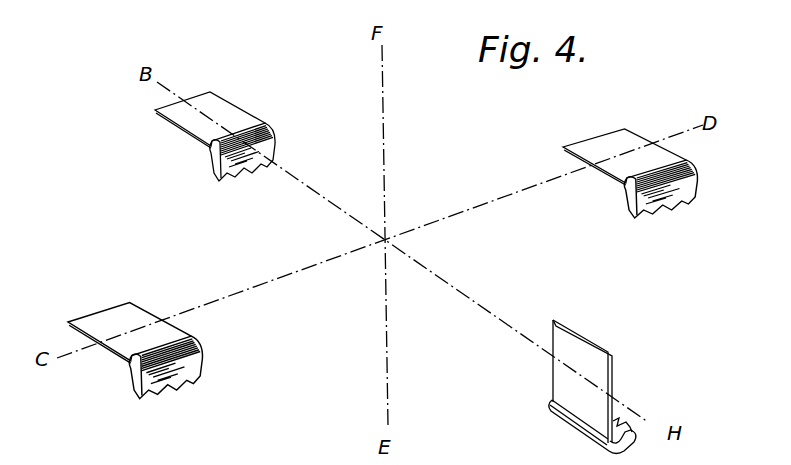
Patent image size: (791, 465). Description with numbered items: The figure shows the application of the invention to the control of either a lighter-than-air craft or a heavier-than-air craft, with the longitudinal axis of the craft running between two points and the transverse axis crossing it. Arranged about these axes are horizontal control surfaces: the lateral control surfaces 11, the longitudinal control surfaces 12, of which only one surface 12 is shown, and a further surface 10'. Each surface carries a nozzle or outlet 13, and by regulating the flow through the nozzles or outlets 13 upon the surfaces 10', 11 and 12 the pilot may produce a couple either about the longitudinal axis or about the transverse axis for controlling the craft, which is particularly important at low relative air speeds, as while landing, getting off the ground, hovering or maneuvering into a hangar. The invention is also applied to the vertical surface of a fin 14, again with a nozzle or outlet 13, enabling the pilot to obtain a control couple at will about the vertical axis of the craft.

The control surface 10' is at (134, 333).
The lateral control surface 11 is at (628, 137).
The longitudinal control surface 12 is at (217, 102).
The nozzle or outlet 13 is at (208, 141).
The fin 14 is at (598, 369).